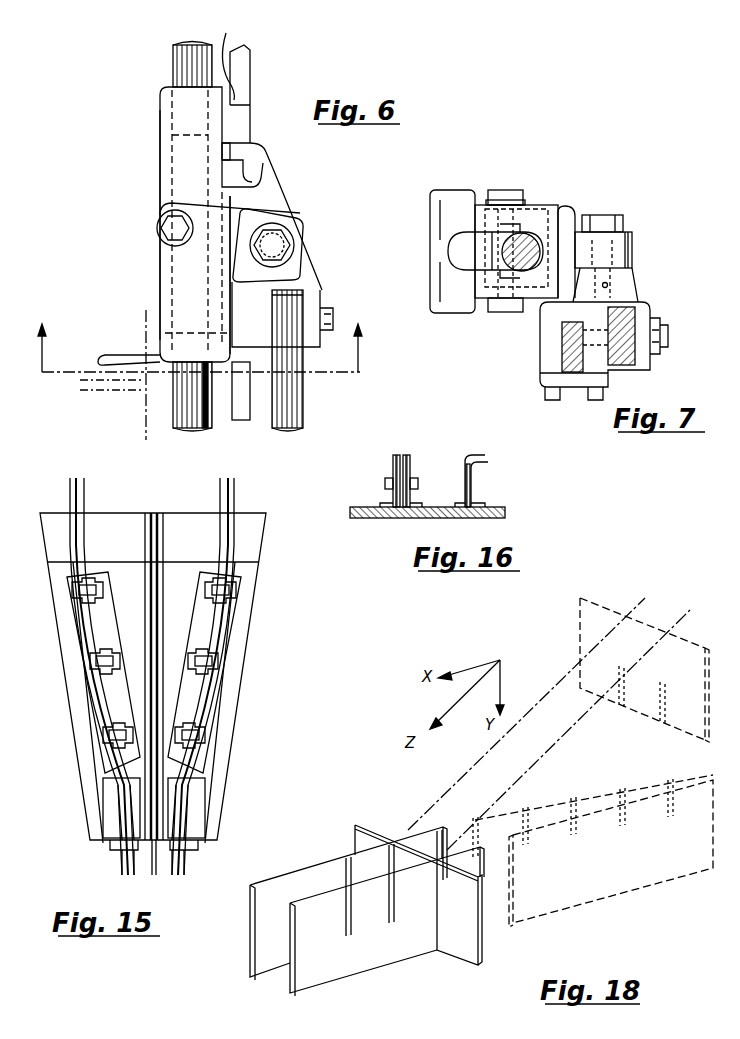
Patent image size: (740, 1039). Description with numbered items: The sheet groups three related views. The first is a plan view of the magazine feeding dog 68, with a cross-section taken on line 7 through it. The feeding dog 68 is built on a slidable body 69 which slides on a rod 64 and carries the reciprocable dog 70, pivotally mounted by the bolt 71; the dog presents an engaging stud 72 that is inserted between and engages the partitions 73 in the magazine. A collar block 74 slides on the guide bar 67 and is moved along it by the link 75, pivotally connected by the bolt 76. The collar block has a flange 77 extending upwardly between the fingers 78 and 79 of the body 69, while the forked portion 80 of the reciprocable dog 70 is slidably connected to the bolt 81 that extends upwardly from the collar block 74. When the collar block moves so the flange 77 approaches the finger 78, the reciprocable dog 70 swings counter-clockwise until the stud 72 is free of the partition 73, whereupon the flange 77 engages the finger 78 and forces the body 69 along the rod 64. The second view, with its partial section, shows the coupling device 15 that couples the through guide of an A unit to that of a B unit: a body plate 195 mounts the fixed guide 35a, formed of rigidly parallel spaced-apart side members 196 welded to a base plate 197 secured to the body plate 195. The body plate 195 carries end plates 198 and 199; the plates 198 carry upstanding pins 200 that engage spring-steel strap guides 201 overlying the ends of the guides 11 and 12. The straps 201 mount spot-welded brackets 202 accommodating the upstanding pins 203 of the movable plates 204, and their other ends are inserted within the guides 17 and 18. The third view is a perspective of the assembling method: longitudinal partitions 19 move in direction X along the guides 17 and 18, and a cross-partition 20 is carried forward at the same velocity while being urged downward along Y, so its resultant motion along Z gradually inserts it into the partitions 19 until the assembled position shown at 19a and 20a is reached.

In FIG. 6, the section line 7- 7 is at (200, 372).
In FIG. 15, the guide 11 is at (116, 871).
In FIG. 15, the guide 12 is at (188, 868).
In FIG. 15, the coupling device 15 is at (270, 617).
In FIG. 15, the guide 17 is at (68, 483).
In FIG. 15, the guide 18 is at (236, 483).
In FIG. 18, the longitudinal partition 19 is at (490, 903).
In FIG. 18, the assembled longitudinal partition 19a is at (335, 960).
In FIG. 18, the cross-partition 20 is at (652, 640).
In FIG. 18, the assembled cross-partition 20a is at (380, 840).
In FIG. 15, the fixed guide 35a is at (143, 528).
In FIG. 6, the rod 64 is at (175, 60).
In FIG. 7, the rod 64 is at (525, 235).
In FIG. 6, the guide bar 67 is at (245, 60).
In FIG. 7, the guide bar 67 is at (572, 350).
In FIG. 6, the feeding dog 68 is at (158, 100).
In FIG. 7, the feeding dog 68 is at (578, 205).
In FIG. 6, the slidable body 69 is at (159, 177).
In FIG. 7, the slidable body 69 is at (495, 251).
In FIG. 6, the reciprocable dog 70 is at (165, 305).
In FIG. 7, the reciprocable dog 70 is at (478, 200).
In FIG. 6, the bolt 71 is at (165, 228).
In FIG. 7, the bolt 71 is at (510, 188).
In FIG. 6, the engaging stud 72 is at (105, 354).
In FIG. 7, the engaging stud 72 is at (455, 192).
In FIG. 6, the partition 73 is at (93, 390).
In FIG. 6, the collar block 74 is at (285, 195).
In FIG. 6, the link 75 is at (300, 408).
In FIG. 6, the bolt 76 is at (331, 330).
In FIG. 7, the bolt 76 is at (668, 337).
In FIG. 6, the flange 77 is at (240, 148).
In FIG. 6, the finger 78 is at (223, 64).
In FIG. 6, the finger 79 is at (245, 172).
In FIG. 6, the forked portion 80 is at (300, 272).
In FIG. 7, the forked portion 80 is at (632, 248).
In FIG. 6, the bolt 81 is at (294, 252).
In FIG. 7, the bolt 81 is at (612, 215).
In FIG. 16, the body plate 195 is at (500, 507).
In FIG. 15, the body plate 195 is at (236, 716).
In FIG. 16, the side member 196 is at (480, 463).
In FIG. 15, the side member 196 is at (155, 545).
In FIG. 16, the base plate 197 is at (480, 503).
In FIG. 15, the base plate 197 is at (165, 608).
In FIG. 15, the end plate 198 is at (108, 805).
In FIG. 15, the end plate 199 is at (245, 545).
In FIG. 15, the upstanding pin 200 is at (105, 842).
In FIG. 16, the strap guide 201 is at (402, 458).
In FIG. 15, the strap guide 201 is at (120, 795).
In FIG. 16, the bracket 202 is at (386, 480).
In FIG. 15, the bracket 202 is at (76, 592).
In FIG. 16, the upstanding pin 203 is at (395, 470).
In FIG. 15, the upstanding pin 203 is at (95, 668).
In FIG. 16, the movable plate 204 is at (382, 503).
In FIG. 15, the movable plate 204 is at (90, 703).